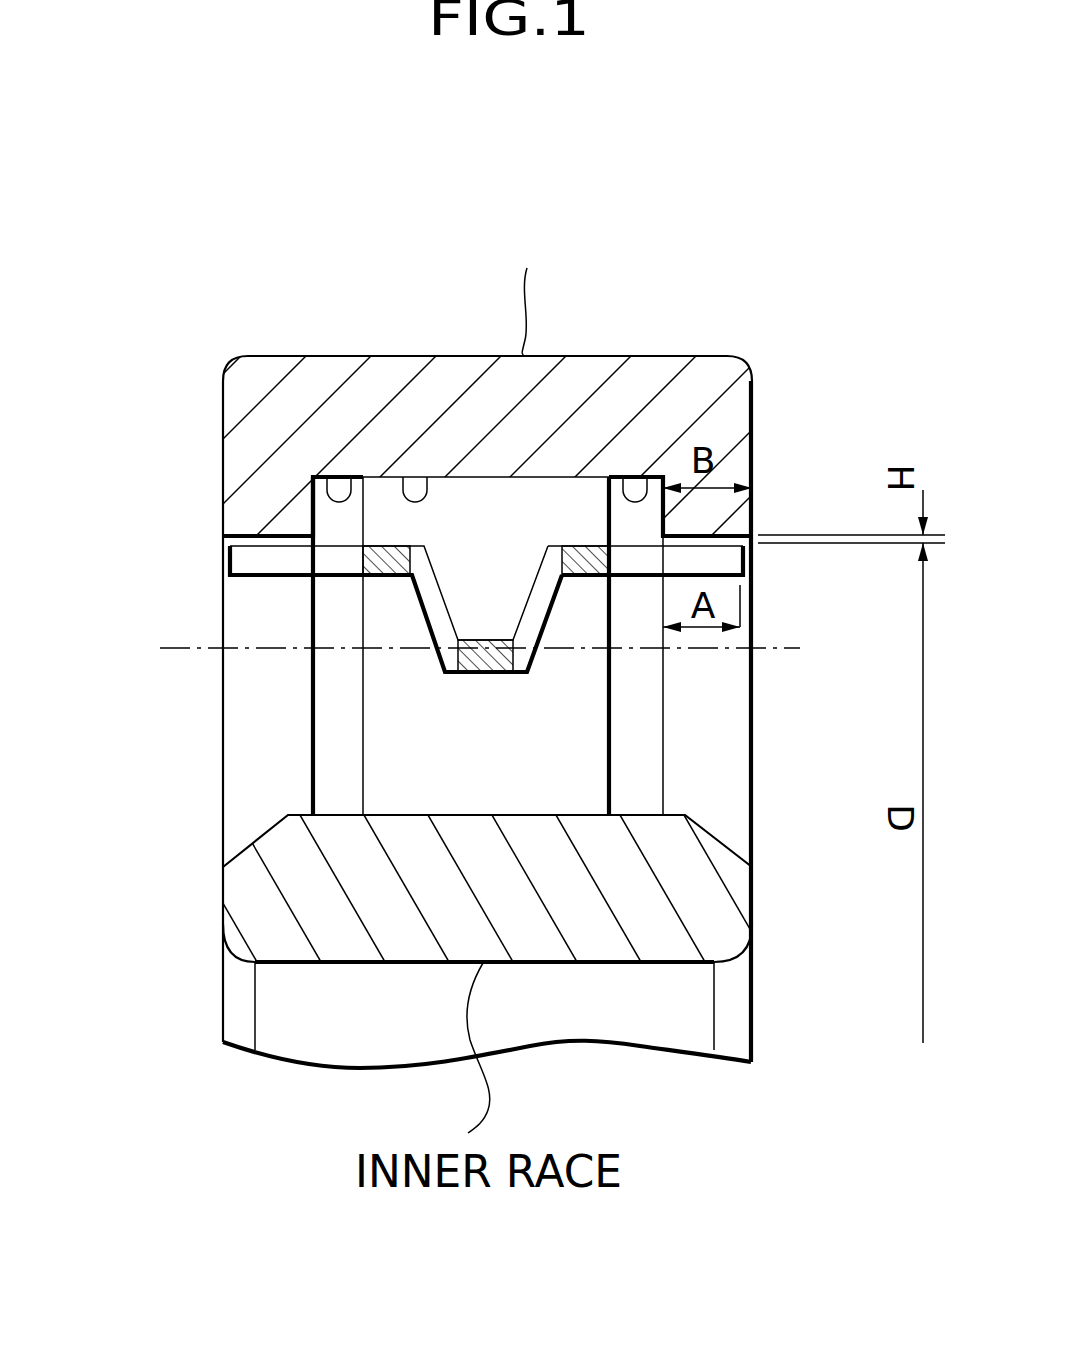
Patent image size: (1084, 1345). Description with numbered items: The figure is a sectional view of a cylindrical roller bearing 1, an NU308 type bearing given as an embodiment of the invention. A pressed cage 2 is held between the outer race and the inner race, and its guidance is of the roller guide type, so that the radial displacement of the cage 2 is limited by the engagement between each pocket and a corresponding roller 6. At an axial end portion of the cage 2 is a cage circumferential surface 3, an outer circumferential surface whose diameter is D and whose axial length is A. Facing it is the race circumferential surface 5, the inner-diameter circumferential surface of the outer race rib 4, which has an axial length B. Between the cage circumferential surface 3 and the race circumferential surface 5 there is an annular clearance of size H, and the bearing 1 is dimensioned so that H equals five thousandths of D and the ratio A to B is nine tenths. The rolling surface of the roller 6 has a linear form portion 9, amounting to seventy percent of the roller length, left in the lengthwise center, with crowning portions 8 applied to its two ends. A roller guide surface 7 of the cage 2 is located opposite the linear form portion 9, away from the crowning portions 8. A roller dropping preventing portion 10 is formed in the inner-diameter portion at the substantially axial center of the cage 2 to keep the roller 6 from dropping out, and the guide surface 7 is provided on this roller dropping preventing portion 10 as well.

The cylindrical roller bearing 1 is at (806, 328).
The pressed cage 2 is at (243, 563).
The cage circumferential surface 3 is at (720, 528).
The outer race rib 4 is at (700, 383).
The race circumferential surface 5 is at (737, 592).
The roller 6 is at (587, 740).
The roller guide surface 7 is at (393, 542).
The crowning portions 8 is at (326, 498).
The linear form portion 9 is at (415, 498).
The roller dropping preventing portion 10 is at (482, 673).